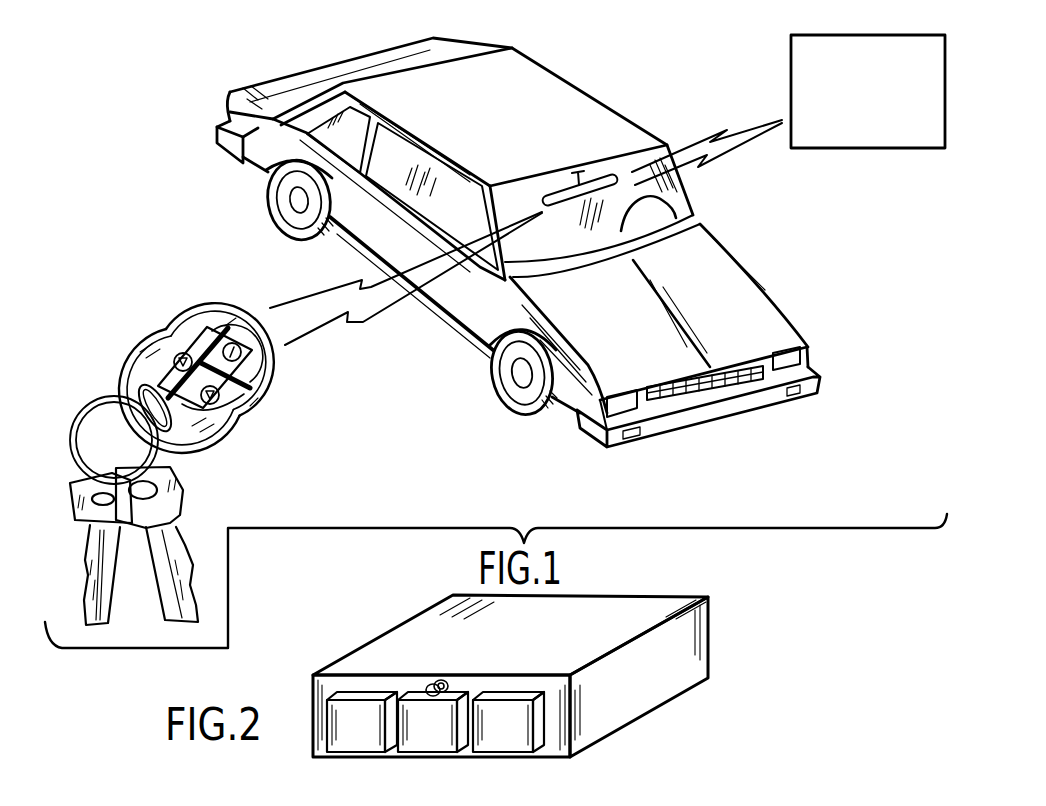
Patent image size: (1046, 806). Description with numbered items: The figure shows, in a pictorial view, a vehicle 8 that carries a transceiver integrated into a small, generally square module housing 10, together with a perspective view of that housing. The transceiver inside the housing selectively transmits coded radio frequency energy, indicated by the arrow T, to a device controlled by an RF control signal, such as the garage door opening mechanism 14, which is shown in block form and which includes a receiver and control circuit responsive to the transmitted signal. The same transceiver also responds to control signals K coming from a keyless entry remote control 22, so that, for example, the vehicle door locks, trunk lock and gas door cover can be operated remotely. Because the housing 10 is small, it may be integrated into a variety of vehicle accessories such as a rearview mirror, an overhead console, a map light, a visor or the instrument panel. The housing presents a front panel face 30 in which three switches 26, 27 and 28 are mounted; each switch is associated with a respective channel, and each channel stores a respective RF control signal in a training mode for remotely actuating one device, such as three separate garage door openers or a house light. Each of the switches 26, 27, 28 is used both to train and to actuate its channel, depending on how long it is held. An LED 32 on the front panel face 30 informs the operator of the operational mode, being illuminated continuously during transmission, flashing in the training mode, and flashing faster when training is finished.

In FIG. 1, the vehicle 8 is at (590, 80).
In FIG. 1, the transmitted coded RF signal T is at (706, 132).
In FIG. 1, the keyless entry control signal K is at (376, 322).
In FIG. 1, the garage door opening mechanism 14 is at (862, 148).
In FIG. 1, the keyless entry remote control 22 is at (262, 432).
In FIG. 2, the module housing 10 is at (528, 679).
In FIG. 2, the switch 26 is at (364, 745).
In FIG. 2, the switch 27 is at (431, 742).
In FIG. 2, the switch 28 is at (512, 742).
In FIG. 2, the front panel face 30 is at (314, 747).
In FIG. 2, the LED 32 is at (437, 680).